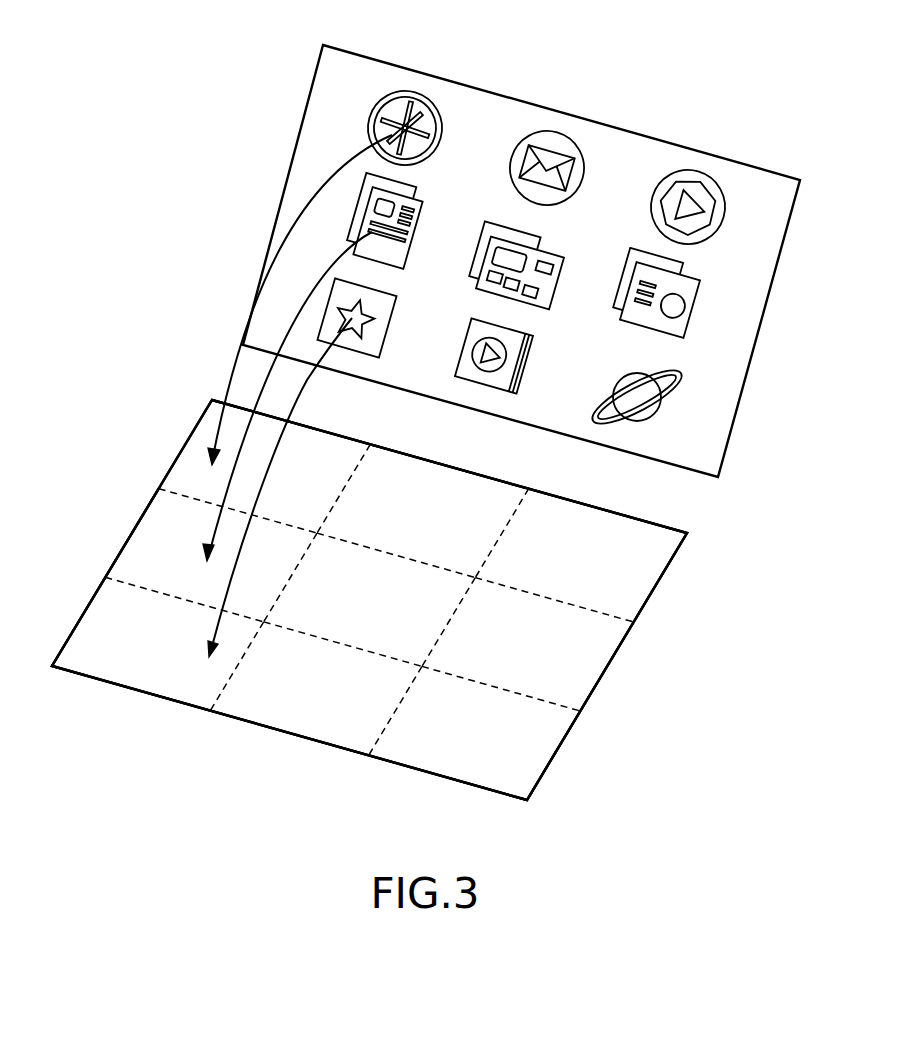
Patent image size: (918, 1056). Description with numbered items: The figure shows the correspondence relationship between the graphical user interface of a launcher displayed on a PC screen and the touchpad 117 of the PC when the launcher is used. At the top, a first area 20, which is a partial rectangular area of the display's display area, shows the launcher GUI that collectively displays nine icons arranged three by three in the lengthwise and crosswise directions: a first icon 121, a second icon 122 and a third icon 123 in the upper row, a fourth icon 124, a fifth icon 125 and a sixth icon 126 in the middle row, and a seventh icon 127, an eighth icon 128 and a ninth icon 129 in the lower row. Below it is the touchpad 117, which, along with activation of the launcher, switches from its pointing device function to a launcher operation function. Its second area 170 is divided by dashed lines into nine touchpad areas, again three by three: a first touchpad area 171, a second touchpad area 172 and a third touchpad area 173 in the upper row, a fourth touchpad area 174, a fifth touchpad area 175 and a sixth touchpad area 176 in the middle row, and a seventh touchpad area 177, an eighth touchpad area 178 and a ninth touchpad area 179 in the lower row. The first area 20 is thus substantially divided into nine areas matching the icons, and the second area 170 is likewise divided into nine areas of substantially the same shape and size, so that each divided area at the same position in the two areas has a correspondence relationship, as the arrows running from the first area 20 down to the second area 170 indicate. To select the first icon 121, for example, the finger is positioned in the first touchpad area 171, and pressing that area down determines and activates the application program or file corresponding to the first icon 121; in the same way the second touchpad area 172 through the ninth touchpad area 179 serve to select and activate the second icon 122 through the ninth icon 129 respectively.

The first area 20 is at (758, 342).
The touchpad 117 is at (690, 588).
The first icon 121 is at (404, 91).
The second icon 122 is at (547, 131).
The third icon 123 is at (688, 170).
The fourth icon 124 is at (422, 212).
The fifth icon 125 is at (562, 263).
The sixth icon 126 is at (703, 300).
The seventh icon 127 is at (385, 343).
The eighth icon 128 is at (527, 384).
The ninth icon 129 is at (661, 408).
The second area 170 is at (578, 664).
The first touchpad area 171 is at (317, 457).
The second touchpad area 172 is at (473, 500).
The third touchpad area 173 is at (637, 537).
The fourth touchpad area 174 is at (152, 535).
The fifth touchpad area 175 is at (358, 612).
The sixth touchpad area 176 is at (517, 655).
The seventh touchpad area 177 is at (98, 623).
The eighth touchpad area 178 is at (340, 718).
The ninth touchpad area 179 is at (500, 763).